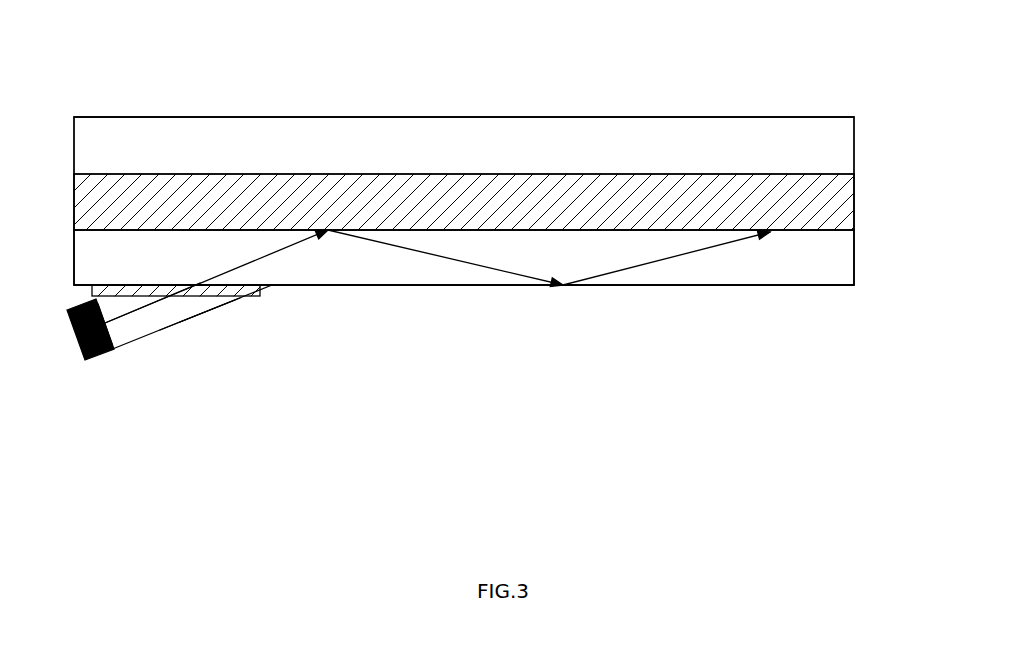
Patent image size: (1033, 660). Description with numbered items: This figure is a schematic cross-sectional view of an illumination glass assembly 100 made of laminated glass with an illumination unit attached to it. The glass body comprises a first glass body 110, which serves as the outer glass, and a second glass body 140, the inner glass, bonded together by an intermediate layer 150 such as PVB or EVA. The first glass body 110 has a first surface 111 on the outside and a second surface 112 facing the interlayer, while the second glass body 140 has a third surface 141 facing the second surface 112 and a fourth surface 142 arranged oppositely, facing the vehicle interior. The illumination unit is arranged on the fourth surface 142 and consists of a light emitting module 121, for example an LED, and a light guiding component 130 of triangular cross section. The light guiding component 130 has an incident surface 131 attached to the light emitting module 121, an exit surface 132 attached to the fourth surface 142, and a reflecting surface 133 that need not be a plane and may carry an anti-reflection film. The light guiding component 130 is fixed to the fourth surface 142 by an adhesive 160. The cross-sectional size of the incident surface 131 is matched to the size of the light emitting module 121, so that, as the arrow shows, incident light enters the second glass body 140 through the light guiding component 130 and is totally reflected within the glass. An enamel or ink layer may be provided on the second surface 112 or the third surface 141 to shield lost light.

The illumination glass assembly 100 is at (482, 41).
The first glass body 110 is at (707, 140).
The first surface 111 is at (597, 117).
The second surface 112 is at (805, 173).
The intermediate layer 150 is at (828, 207).
The third surface 141 is at (805, 230).
The second glass body 140 is at (713, 270).
The fourth surface 142 is at (612, 285).
The adhesive 160 is at (263, 288).
The light emitting module 121 is at (100, 358).
The light guiding component 130 is at (163, 320).
The incident surface 131 is at (110, 338).
The exit surface 132 is at (217, 298).
The reflecting surface 133 is at (215, 315).